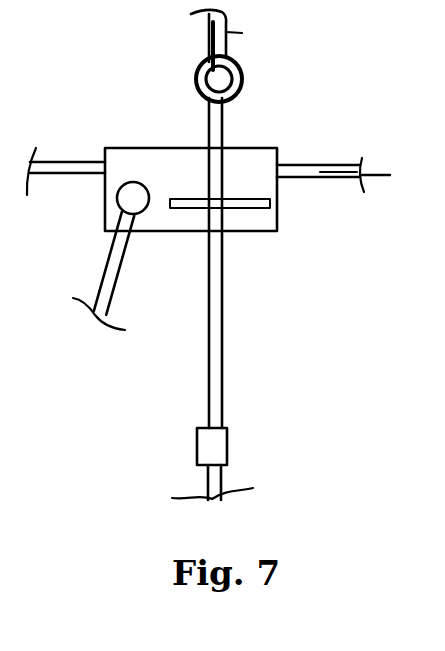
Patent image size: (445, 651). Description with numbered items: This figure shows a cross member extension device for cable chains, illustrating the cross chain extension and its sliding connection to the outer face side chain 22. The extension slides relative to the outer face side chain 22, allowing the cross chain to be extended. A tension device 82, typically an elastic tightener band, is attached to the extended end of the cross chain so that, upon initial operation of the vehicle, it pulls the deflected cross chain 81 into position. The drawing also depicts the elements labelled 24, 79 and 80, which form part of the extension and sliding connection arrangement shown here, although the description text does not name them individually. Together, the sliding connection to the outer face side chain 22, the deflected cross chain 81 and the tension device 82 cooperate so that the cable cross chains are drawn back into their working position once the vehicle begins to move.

The outer face side chain 22 is at (307, 163).
The handle 24 is at (125, 264).
The housing 79 is at (243, 148).
The rod 80 is at (256, 308).
The deflected cross chain 81 is at (228, 442).
The tension device 82 is at (228, 43).